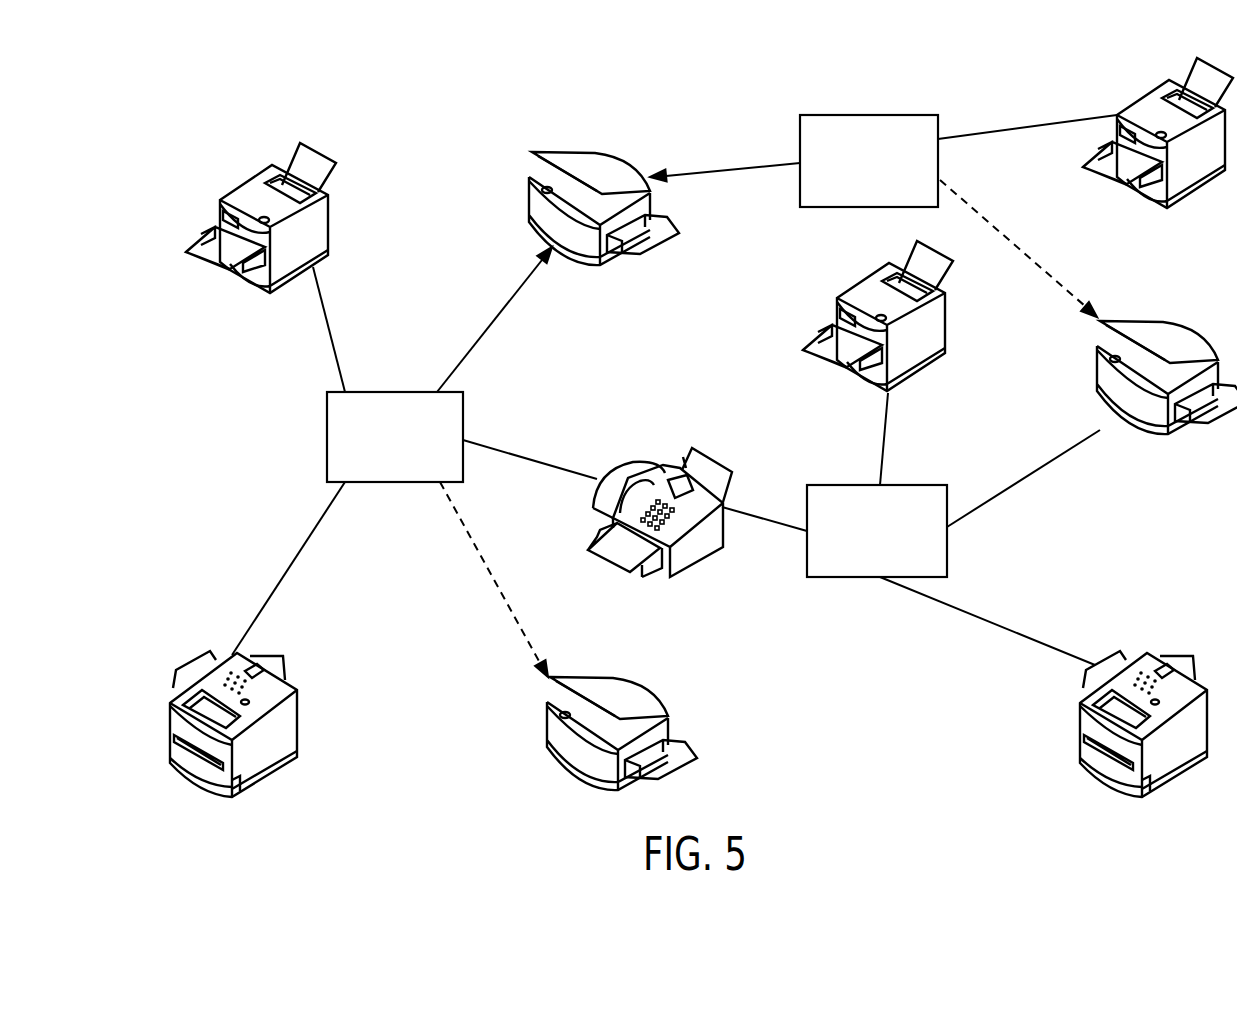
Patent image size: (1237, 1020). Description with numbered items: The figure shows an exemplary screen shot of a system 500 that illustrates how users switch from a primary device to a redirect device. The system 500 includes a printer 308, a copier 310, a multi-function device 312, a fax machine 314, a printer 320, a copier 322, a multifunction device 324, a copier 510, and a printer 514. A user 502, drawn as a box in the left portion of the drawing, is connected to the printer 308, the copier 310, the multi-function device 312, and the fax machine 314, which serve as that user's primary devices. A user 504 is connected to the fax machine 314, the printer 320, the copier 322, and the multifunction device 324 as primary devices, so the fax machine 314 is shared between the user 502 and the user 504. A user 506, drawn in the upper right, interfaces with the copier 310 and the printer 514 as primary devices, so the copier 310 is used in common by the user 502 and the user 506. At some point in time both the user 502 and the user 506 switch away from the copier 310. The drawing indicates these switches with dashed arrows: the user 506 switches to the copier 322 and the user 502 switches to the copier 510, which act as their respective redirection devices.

The system 500 is at (195, 111).
The printer 308 is at (243, 185).
The copier 310 is at (529, 180).
The multi-function device 312 is at (299, 697).
The fax machine 314 is at (672, 470).
The printer 320 is at (858, 281).
The copier 322 is at (1097, 348).
The multifunction device 324 is at (1080, 705).
The user 502 is at (327, 433).
The user 504 is at (848, 578).
The user 506 is at (838, 115).
The copier 510 is at (547, 712).
The printer 514 is at (1137, 102).